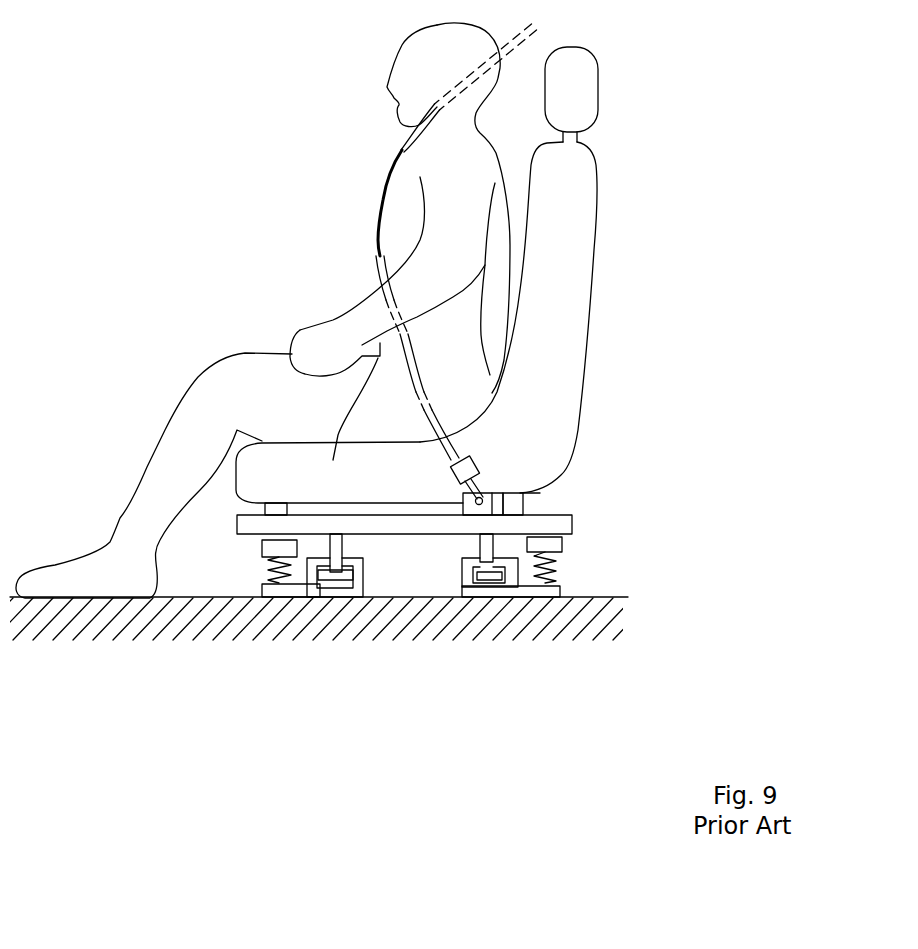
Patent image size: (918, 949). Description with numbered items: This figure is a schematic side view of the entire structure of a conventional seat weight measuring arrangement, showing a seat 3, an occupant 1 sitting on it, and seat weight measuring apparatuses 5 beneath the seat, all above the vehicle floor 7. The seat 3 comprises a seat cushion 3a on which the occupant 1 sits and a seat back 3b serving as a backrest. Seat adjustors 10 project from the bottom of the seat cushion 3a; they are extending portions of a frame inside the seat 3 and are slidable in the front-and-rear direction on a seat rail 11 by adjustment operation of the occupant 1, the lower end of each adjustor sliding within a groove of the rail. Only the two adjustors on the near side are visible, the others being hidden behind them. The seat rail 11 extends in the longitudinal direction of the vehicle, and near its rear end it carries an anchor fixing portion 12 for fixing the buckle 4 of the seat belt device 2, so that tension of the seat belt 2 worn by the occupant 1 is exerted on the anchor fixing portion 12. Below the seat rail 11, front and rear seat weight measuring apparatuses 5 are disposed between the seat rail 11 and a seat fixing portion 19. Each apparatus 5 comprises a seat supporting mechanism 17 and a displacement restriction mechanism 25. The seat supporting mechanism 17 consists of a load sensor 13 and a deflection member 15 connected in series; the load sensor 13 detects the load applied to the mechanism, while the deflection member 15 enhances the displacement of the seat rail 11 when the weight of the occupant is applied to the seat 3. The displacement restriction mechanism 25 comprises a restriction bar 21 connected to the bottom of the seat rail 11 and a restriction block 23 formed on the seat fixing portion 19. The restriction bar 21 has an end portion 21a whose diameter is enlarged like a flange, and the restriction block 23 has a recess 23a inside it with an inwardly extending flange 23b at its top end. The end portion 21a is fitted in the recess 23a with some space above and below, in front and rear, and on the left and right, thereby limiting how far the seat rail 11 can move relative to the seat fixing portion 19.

The occupant 1 is at (390, 230).
The seat belt device 2 is at (437, 107).
The seat 3 is at (443, 281).
The seat cushion 3a is at (410, 370).
The seat back 3b is at (580, 307).
The buckle 4 is at (457, 475).
The seat weight measuring apparatus 5 is at (480, 524).
The floor 7 is at (622, 596).
The seat adjustor 10 is at (540, 493).
The seat rail 11 is at (573, 512).
The anchor fixing portion 12 is at (463, 500).
The load sensor 13 is at (560, 545).
The deflection member 15 is at (560, 565).
The seat supporting mechanism 17 is at (479, 545).
The seat fixing portion 19 is at (560, 585).
The restriction bar 21 is at (444, 614).
The end portion 21a is at (503, 598).
The restriction block 23 is at (454, 587).
The recess 23a is at (483, 598).
The flange 23b is at (500, 553).
The displacement restriction mechanism 25 is at (454, 587).